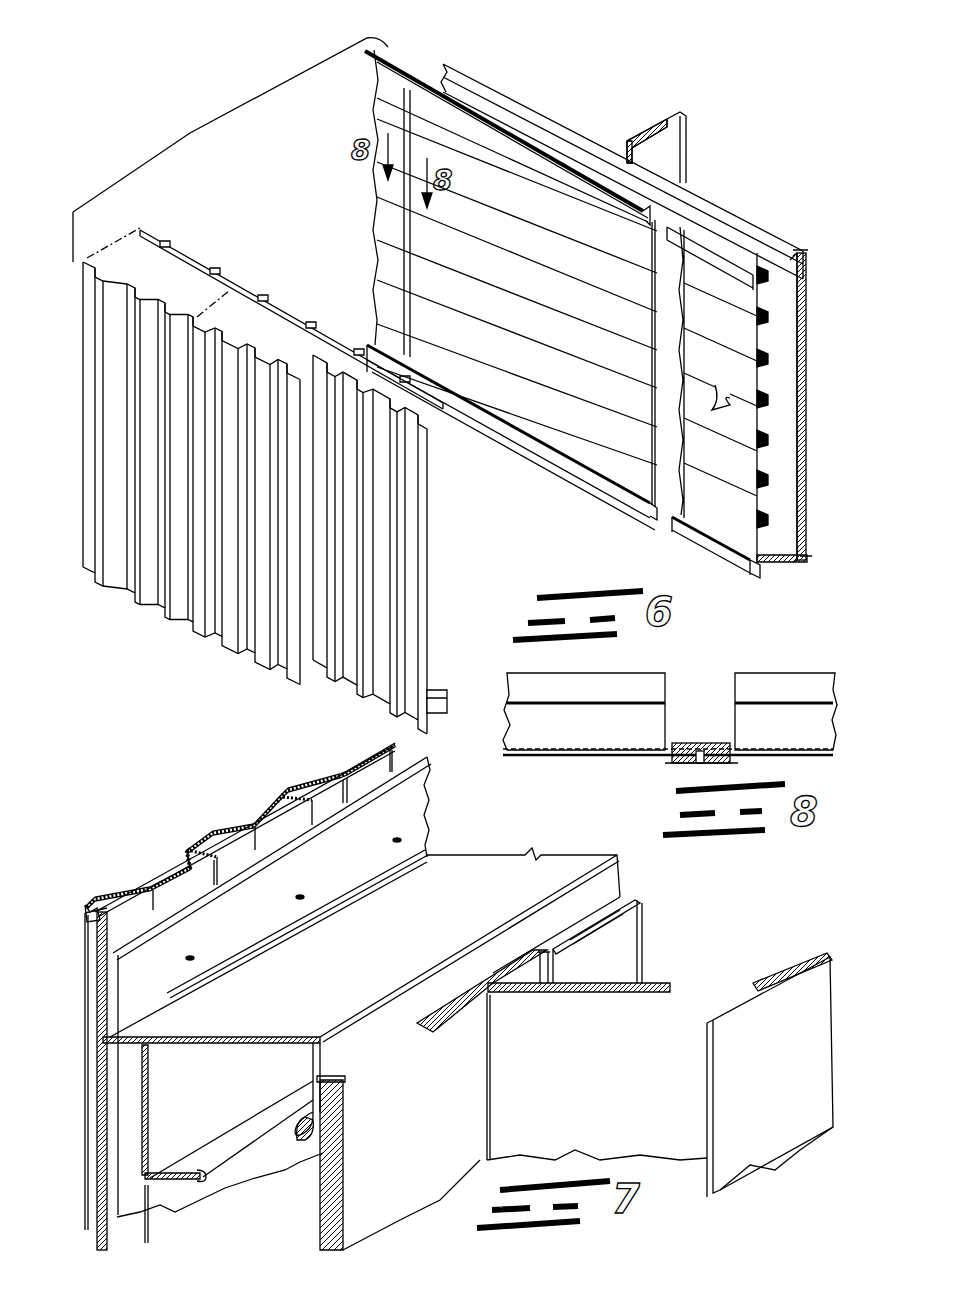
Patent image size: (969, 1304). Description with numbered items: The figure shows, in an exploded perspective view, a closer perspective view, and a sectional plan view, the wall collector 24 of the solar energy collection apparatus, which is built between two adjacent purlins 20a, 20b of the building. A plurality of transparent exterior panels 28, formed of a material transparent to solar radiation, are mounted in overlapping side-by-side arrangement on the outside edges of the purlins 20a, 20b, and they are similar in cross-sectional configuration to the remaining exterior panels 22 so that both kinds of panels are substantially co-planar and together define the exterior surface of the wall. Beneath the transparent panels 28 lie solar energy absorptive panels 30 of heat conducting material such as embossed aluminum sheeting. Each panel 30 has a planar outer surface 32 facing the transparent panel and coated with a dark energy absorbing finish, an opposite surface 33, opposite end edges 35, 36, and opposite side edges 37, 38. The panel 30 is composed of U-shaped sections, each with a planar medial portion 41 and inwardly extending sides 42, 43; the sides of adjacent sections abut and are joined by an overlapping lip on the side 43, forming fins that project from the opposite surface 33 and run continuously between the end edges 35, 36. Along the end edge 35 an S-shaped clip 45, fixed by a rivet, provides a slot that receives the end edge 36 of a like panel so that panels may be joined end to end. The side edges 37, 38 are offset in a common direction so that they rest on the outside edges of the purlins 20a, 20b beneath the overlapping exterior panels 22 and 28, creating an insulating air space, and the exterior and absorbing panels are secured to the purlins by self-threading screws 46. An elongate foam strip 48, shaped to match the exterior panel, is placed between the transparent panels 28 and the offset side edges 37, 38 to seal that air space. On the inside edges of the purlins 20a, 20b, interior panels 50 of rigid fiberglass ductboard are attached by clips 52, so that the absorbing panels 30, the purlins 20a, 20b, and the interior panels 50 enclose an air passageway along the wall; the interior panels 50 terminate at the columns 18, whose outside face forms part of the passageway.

In FIG. 6, the column 18 is at (672, 140).
In FIG. 7, the column 18 is at (611, 1092).
In FIG. 6, the purlin 20a is at (770, 243).
In FIG. 7, the purlin 20a is at (372, 953).
In FIG. 6, the purlin 20b is at (777, 566).
In FIG. 7, the exterior panel 22 is at (212, 852).
In FIG. 6, the wall collector 24 is at (168, 115).
In FIG. 7, the wall collector 24 is at (128, 1082).
In FIG. 6, the transparent exterior panel 28 is at (150, 598).
In FIG. 7, the transparent exterior panel 28 is at (110, 1116).
In FIG. 6, the solar energy absorptive panel 30 is at (782, 502).
In FIG. 7, the solar energy absorptive panel 30 is at (212, 1222).
In FIG. 6, the outer surface 32 is at (543, 396).
In FIG. 6, the opposite surface 33 is at (764, 420).
In FIG. 8, the end edge 35 is at (662, 760).
In FIG. 6, the end edge 36 is at (660, 364).
In FIG. 8, the end edge 36 is at (743, 738).
In FIG. 6, the side edge 37 is at (503, 140).
In FIG. 7, the side edge 37 is at (108, 1000).
In FIG. 6, the side edge 38 is at (700, 250).
In FIG. 8, the side edge 38 is at (668, 752).
In FIG. 6, the planar medial portion 41 is at (535, 268).
In FIG. 8, the planar medial portion 41 is at (614, 748).
In FIG. 7, the planar medial portion 41 is at (265, 1087).
In FIG. 8, the inwardly extending side 42 is at (733, 711).
In FIG. 7, the inwardly extending side 42 is at (170, 1175).
In FIG. 7, the inwardly extending side 43 is at (190, 1182).
In FIG. 6, the clip 45 is at (408, 240).
In FIG. 8, the clip 45 is at (727, 760).
In FIG. 7, the self-threading screw 46 is at (397, 840).
In FIG. 6, the foam strip 48 is at (190, 258).
In FIG. 6, the interior panel 50 is at (806, 354).
In FIG. 7, the interior panel 50 is at (383, 1155).
In FIG. 6, the clip 52 is at (811, 250).
In FIG. 7, the clip 52 is at (637, 918).